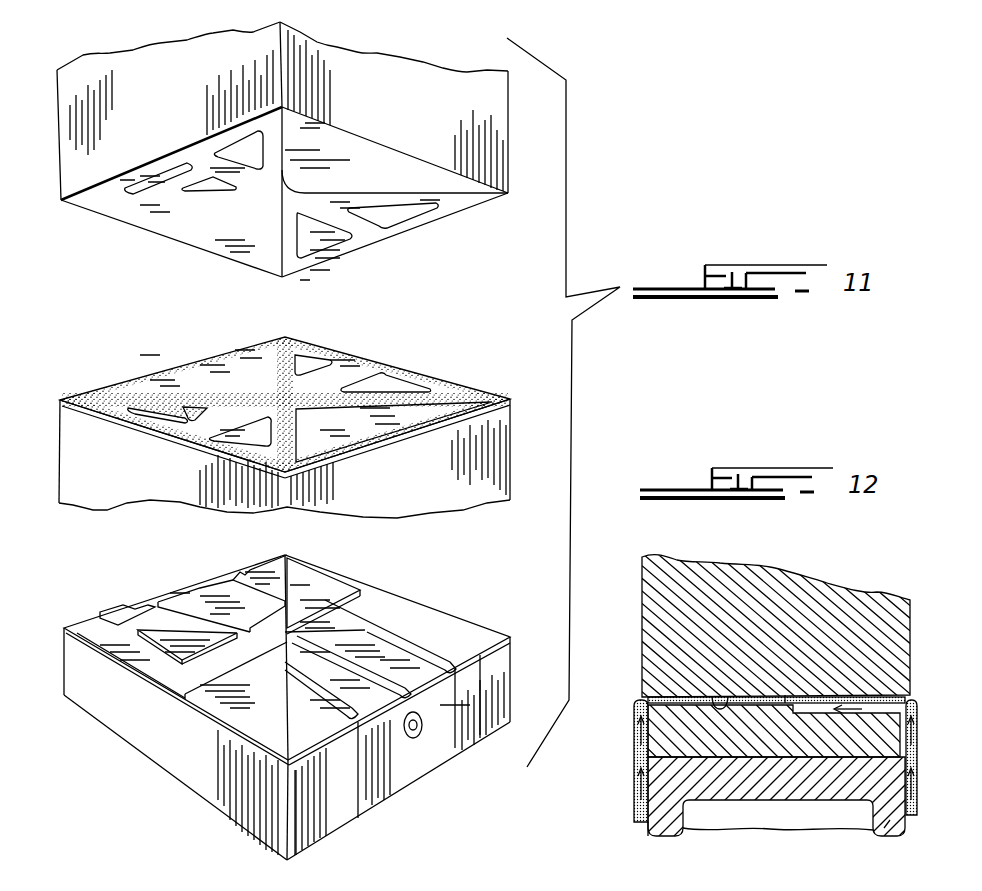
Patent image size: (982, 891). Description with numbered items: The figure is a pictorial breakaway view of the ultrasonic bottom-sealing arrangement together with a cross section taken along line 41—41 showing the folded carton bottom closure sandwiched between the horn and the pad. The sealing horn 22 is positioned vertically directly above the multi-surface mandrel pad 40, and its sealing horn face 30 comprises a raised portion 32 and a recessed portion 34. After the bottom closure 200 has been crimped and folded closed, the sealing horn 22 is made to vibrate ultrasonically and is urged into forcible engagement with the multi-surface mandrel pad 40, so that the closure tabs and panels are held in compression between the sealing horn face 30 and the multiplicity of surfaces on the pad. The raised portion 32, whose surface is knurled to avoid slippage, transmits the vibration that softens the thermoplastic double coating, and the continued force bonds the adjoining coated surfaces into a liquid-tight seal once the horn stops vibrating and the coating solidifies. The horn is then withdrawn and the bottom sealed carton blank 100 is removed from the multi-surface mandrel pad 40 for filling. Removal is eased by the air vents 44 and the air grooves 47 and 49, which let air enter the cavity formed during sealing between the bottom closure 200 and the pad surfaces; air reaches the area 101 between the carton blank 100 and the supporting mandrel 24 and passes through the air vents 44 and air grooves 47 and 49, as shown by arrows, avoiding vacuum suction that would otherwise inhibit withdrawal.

In FIG. 11, the sealing horn 22 is at (265, 162).
In FIG. 12, the sealing horn 22 is at (630, 628).
In FIG. 11, the sealing horn face 30 is at (280, 205).
In FIG. 11, the raised portion 32 is at (300, 203).
In FIG. 12, the raised portion 32 is at (786, 700).
In FIG. 11, the line 41— 41 is at (182, 256).
In FIG. 11, the bottom closure 200 is at (382, 353).
In FIG. 11, the bottom sealed carton blank 100 is at (297, 417).
In FIG. 12, the bottom sealed carton blank 100 is at (767, 816).
In FIG. 11, the multi-surface mandrel pad 40 is at (518, 657).
In FIG. 12, the multi-surface mandrel pad 40 is at (767, 717).
In FIG. 12, the recessed portion 34 is at (716, 697).
In FIG. 12, the air groove 47 is at (700, 697).
In FIG. 12, the air vents 44 is at (640, 733).
In FIG. 12, the air groove 49 is at (895, 707).
In FIG. 12, the area 101 is at (640, 812).
In FIG. 12, the supporting mandrel 24 is at (890, 820).